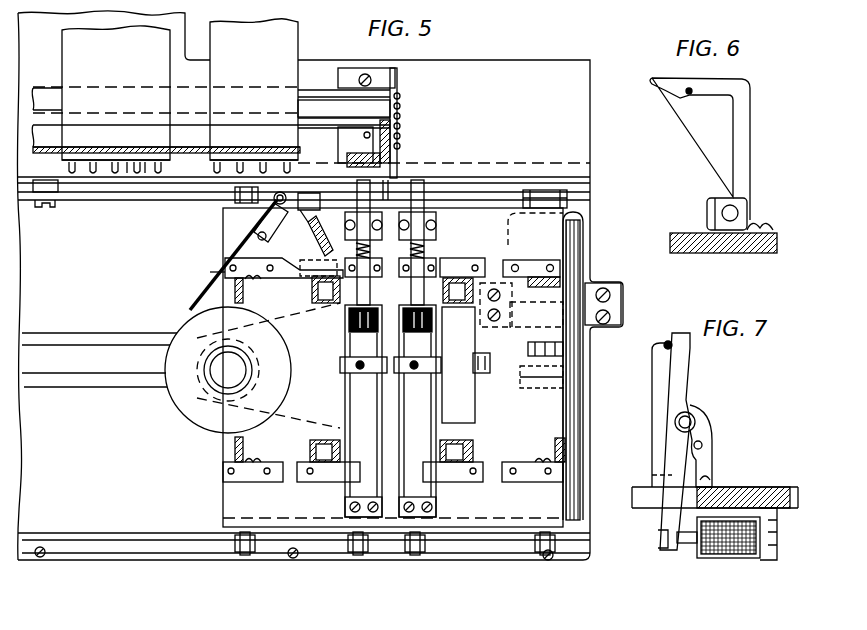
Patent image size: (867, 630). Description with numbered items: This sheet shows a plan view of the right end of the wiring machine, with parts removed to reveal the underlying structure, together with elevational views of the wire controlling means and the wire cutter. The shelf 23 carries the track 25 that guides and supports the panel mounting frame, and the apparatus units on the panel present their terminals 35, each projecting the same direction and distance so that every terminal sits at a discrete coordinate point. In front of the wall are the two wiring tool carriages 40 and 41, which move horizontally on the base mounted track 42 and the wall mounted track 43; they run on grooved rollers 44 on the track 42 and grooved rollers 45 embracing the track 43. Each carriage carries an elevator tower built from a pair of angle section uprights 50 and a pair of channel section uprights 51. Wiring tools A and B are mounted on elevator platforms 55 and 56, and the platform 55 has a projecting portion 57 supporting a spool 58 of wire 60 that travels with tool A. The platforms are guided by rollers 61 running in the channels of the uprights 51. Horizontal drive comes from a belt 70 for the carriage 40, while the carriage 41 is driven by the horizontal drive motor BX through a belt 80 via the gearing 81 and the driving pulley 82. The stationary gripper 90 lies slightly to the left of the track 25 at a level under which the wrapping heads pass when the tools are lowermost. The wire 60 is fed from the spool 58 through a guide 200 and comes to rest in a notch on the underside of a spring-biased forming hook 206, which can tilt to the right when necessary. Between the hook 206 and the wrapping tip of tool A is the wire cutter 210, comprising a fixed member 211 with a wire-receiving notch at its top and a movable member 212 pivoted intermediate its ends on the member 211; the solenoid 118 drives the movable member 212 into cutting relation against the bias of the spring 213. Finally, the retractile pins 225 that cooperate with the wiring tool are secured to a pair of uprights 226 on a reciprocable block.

In FIG. 5, the shelf 23 is at (535, 61).
In FIG. 5, the track 25 is at (396, 78).
In FIG. 5, the terminals 35 is at (145, 174).
In FIG. 5, the wiring tool carriage 40 is at (323, 517).
In FIG. 5, the wiring tool carriage 41 is at (483, 517).
In FIG. 5, the base mounted track 42 is at (140, 542).
In FIG. 5, the wall mounted track 43 is at (97, 200).
In FIG. 5, the grooved rollers 44 is at (415, 552).
In FIG. 5, the grooved rollers 45 is at (524, 197).
In FIG. 5, the angle section uprights 50 is at (247, 279).
In FIG. 5, the channel section uprights 51 is at (317, 296).
In FIG. 5, the elevator platform 55 is at (323, 403).
In FIG. 5, the elevator platform 56 is at (470, 414).
In FIG. 5, the projecting portion 57 is at (272, 410).
In FIG. 5, the spool 58 is at (179, 402).
In FIG. 5, the wire 60 is at (212, 272).
In FIG. 6, the wire 60 is at (690, 95).
In FIG. 7, the wire 60 is at (667, 342).
In FIG. 5, the rollers 61 is at (330, 303).
In FIG. 5, the belt 70 is at (72, 333).
In FIG. 5, the belt 80 is at (63, 388).
In FIG. 5, the gearing 81 is at (584, 347).
In FIG. 5, the driving pulley 82 is at (584, 382).
In FIG. 5, the stationary gripper 90 is at (294, 144).
In FIG. 7, the solenoid 118 is at (712, 559).
In FIG. 5, the guide 200 is at (238, 233).
In FIG. 5, the forming hook 206 is at (265, 238).
In FIG. 6, the forming hook 206 is at (738, 80).
In FIG. 7, the wire cutter 210 is at (764, 420).
In FIG. 7, the fixed member 211 is at (653, 452).
In FIG. 7, the movable member 212 is at (686, 381).
In FIG. 7, the spring 213 is at (700, 450).
In FIG. 5, the retractile pins 225 is at (390, 190).
In FIG. 5, the uprights 226 is at (438, 236).
In FIG. 5, the horizontal drive motor BX is at (585, 258).